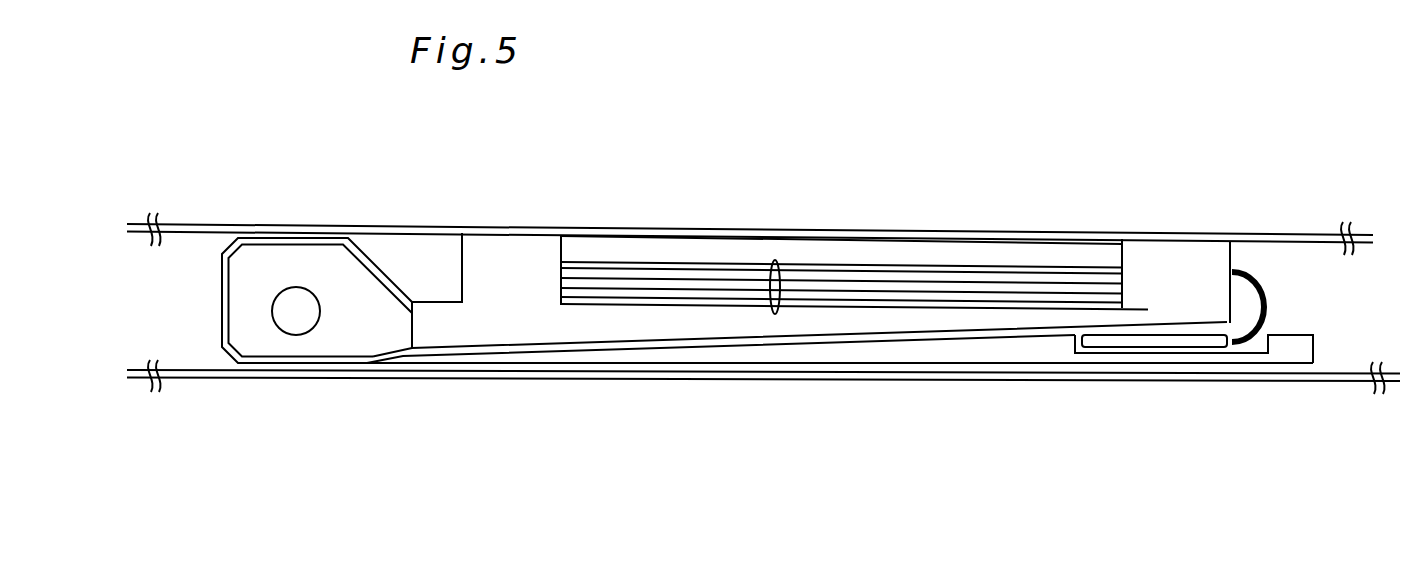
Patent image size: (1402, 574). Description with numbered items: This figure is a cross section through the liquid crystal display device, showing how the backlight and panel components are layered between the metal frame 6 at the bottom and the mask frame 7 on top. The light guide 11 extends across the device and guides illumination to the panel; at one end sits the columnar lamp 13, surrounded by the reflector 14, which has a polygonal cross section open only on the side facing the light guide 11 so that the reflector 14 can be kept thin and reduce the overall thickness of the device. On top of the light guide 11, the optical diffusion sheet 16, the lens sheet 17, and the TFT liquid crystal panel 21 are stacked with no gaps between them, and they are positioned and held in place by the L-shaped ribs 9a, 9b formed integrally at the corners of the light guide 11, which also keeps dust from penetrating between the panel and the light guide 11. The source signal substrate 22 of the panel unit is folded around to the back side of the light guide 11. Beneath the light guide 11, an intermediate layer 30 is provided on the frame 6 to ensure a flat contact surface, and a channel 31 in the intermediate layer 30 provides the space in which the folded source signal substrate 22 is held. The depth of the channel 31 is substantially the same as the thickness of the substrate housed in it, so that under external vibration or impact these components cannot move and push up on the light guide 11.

The metal frame 6 is at (192, 379).
The mask frame 7 is at (1283, 235).
The L-shaped rib 9a is at (498, 242).
The L-shaped rib 9b is at (1178, 256).
The light guide 11 is at (498, 338).
The columnar lamp 13 is at (295, 335).
The reflector 14 is at (222, 298).
The optical diffusion sheet 16 is at (826, 224).
The lens sheet 17 is at (788, 262).
The TFT liquid crystal panel 21 is at (965, 258).
The source signal substrate 22 is at (1178, 340).
The intermediate layer 30 is at (1017, 350).
The channel 31 is at (1246, 337).